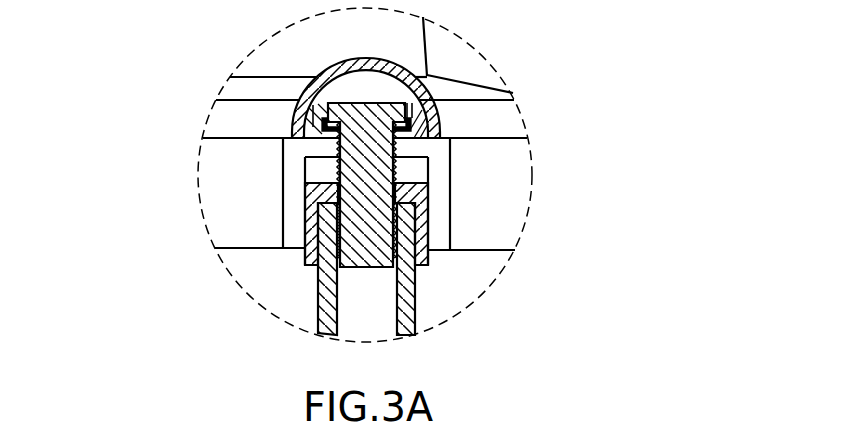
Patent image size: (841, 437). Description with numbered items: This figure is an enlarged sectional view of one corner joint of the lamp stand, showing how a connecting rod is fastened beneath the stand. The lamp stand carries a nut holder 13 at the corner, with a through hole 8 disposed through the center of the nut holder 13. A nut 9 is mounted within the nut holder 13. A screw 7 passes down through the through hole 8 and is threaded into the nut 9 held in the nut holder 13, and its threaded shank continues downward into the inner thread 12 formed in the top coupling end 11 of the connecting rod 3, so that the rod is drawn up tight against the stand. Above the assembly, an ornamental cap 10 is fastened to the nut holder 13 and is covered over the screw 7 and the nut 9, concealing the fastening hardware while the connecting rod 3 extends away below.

The connecting rod 3 is at (407, 275).
The screw 7 is at (397, 160).
The through hole 8 is at (338, 150).
The nut 9 is at (411, 128).
The ornamental cap 10 is at (420, 98).
The top coupling end 11 is at (312, 232).
The inner thread 12 is at (416, 192).
The nut holder 13 is at (302, 101).